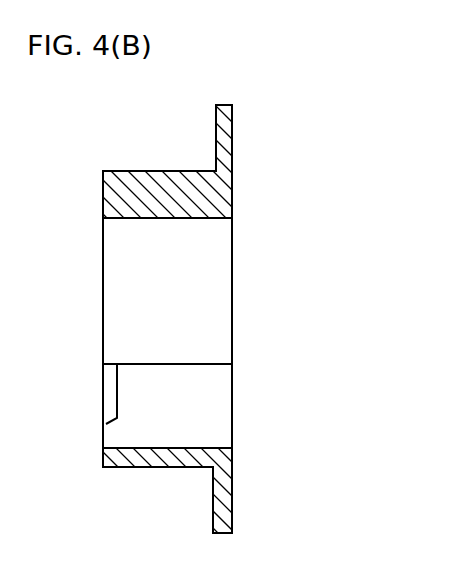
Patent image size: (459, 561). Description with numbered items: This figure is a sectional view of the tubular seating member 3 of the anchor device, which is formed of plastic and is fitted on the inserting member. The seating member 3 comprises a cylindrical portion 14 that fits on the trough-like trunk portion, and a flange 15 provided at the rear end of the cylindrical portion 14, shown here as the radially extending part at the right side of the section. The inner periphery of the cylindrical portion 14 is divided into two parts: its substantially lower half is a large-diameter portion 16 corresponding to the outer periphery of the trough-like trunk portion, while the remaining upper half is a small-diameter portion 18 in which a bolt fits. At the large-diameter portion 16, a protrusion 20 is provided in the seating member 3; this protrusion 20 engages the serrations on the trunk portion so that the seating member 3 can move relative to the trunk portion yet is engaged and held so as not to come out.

The seating member 3 is at (170, 164).
The cylindrical portion 14 is at (129, 178).
The flange 15 is at (222, 108).
The small-diameter portion 18 is at (123, 243).
The protrusion 20 is at (107, 403).
The large-diameter portion 16 is at (133, 448).